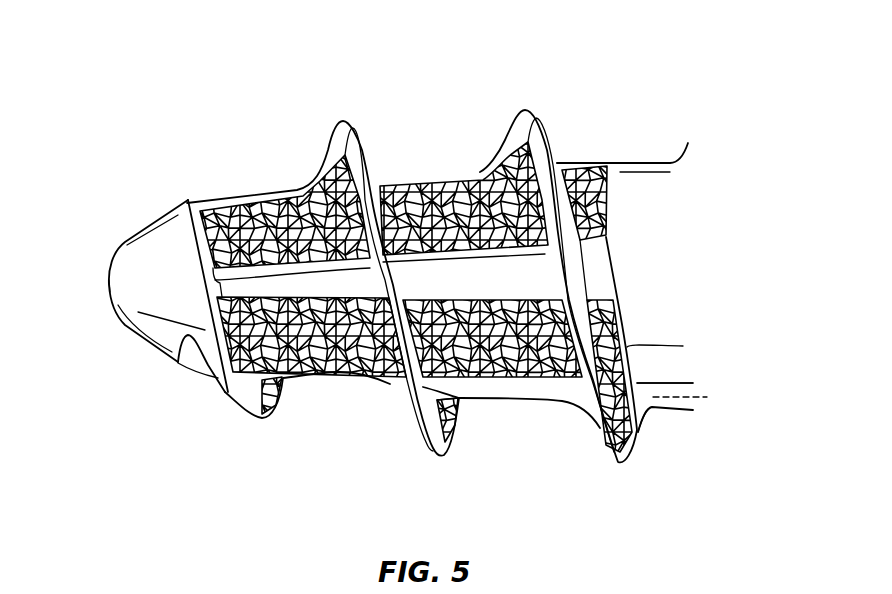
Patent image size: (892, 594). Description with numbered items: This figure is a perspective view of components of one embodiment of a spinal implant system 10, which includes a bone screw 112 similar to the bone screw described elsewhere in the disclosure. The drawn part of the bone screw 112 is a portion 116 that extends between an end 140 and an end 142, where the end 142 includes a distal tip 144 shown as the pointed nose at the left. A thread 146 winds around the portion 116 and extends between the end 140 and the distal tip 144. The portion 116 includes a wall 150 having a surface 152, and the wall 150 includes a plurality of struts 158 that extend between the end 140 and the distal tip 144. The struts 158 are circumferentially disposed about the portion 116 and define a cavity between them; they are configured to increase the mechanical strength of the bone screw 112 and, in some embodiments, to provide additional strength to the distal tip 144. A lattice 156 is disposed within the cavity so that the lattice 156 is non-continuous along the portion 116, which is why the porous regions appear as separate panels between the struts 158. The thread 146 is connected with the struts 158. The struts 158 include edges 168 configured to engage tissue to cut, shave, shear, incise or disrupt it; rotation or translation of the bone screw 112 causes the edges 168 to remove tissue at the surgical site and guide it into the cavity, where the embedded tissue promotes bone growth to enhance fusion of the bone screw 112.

The spinal implant system 10 is at (790, 33).
The bone screw 112 is at (728, 178).
The portion 116 is at (165, 136).
The end 140 is at (675, 373).
The end 142 is at (112, 288).
The distal tip 144 is at (127, 267).
The thread 146 is at (540, 118).
The wall 150 is at (650, 390).
The surface 152 is at (627, 187).
The lattice 156 is at (537, 300).
The struts 158 is at (390, 183).
The edges 168 is at (240, 223).